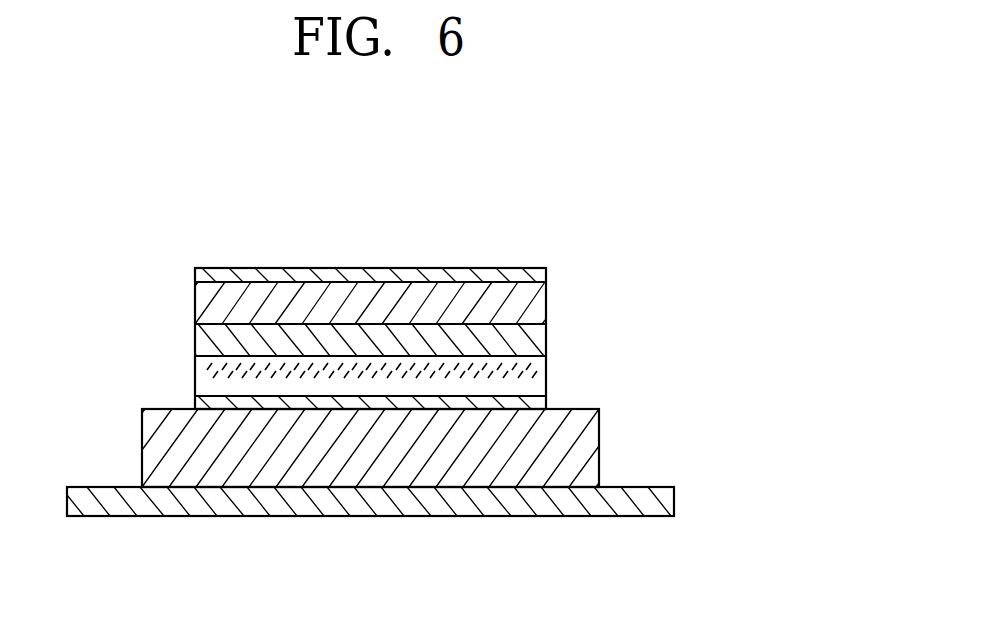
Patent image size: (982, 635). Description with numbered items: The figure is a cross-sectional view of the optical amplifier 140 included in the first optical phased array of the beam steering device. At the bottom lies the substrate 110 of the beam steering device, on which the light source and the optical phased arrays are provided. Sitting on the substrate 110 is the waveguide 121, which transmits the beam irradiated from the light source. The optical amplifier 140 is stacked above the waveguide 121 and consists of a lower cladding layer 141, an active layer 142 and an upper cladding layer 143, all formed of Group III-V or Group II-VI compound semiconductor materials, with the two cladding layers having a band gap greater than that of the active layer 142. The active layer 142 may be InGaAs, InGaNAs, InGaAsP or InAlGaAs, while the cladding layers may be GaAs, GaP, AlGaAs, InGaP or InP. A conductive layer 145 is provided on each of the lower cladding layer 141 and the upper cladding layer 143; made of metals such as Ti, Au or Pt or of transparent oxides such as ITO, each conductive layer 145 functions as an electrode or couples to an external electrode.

The substrate 110 is at (674, 501).
The waveguide 121 is at (600, 442).
The optical amplifier 140 is at (651, 242).
The lower cladding layer 141 is at (542, 373).
The active layer 142 is at (541, 340).
The upper cladding layer 143 is at (542, 303).
The conductive layer 145 is at (542, 277).